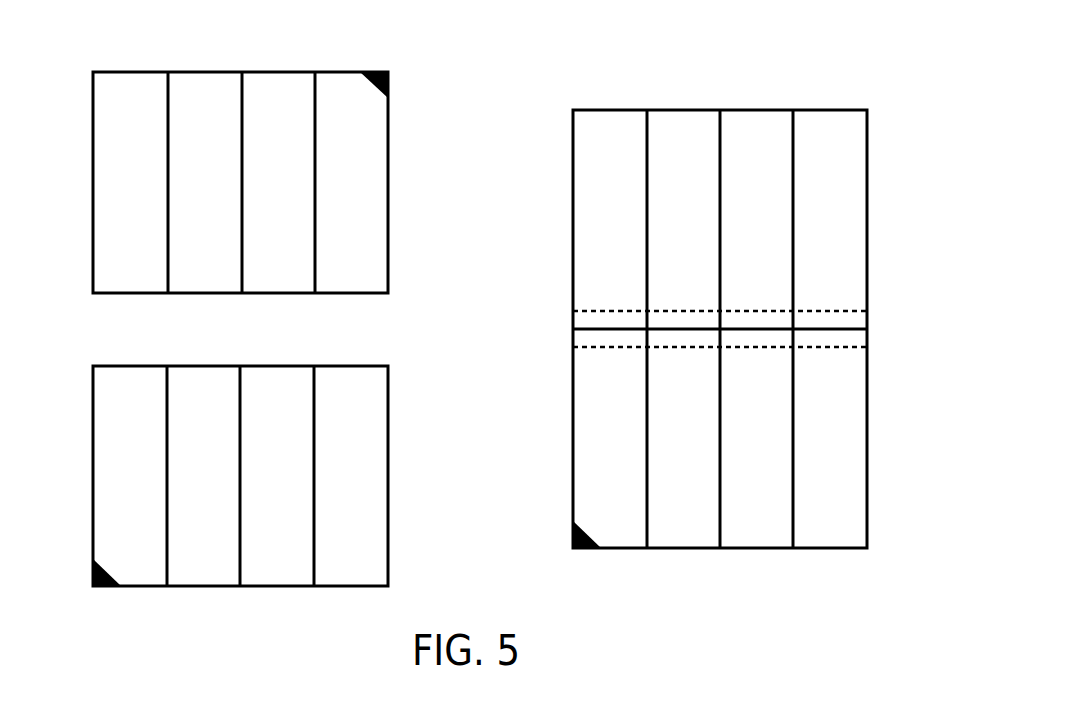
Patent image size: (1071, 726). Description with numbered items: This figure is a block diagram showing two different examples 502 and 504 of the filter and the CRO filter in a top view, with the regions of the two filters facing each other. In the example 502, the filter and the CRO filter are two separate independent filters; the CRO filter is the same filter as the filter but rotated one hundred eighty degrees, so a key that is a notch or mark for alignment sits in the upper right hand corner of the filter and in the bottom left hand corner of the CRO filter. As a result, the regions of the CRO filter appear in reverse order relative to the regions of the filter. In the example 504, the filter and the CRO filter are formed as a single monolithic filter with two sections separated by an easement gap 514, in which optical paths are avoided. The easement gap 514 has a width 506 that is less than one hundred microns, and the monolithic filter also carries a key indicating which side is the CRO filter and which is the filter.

The example 502 is at (135, 34).
The example 504 is at (614, 34).
The width 506 is at (562, 310).
The easement gap 514 is at (869, 329).